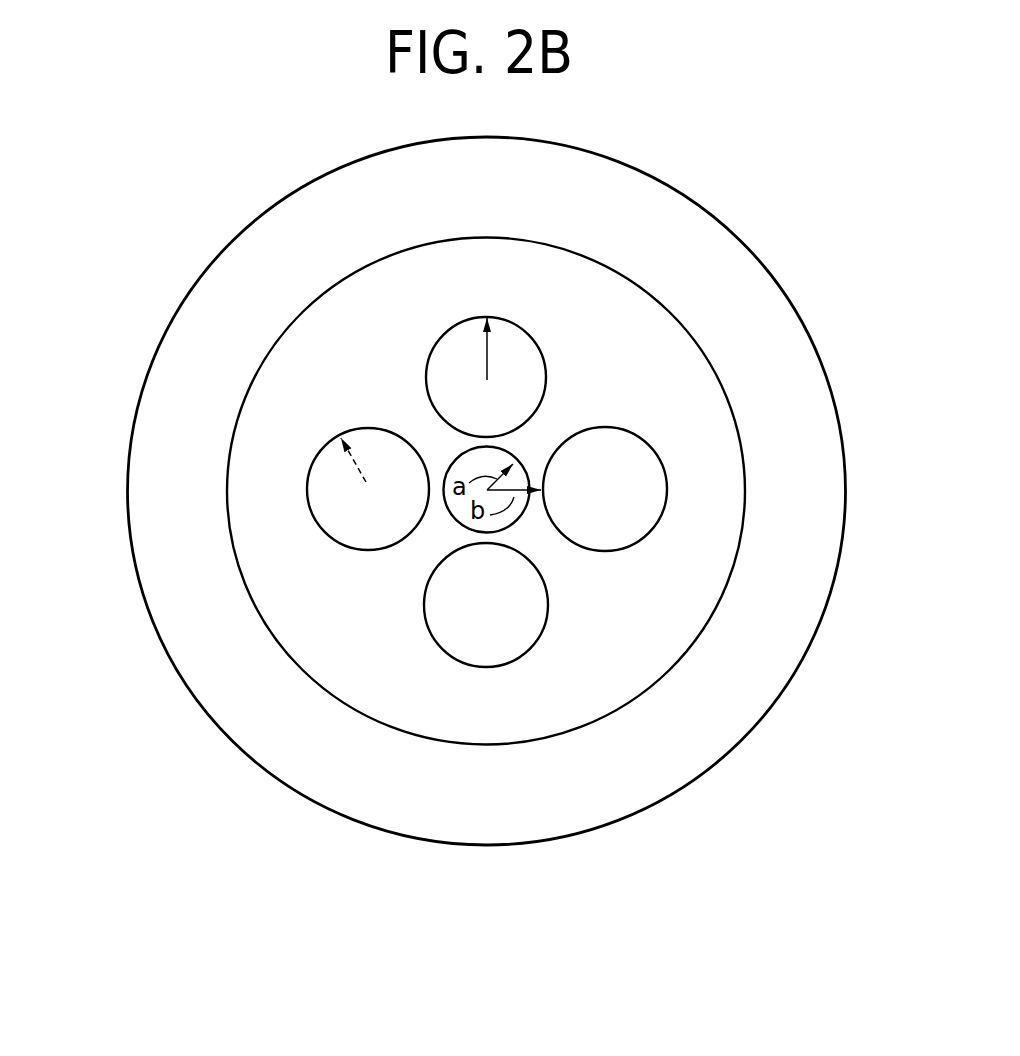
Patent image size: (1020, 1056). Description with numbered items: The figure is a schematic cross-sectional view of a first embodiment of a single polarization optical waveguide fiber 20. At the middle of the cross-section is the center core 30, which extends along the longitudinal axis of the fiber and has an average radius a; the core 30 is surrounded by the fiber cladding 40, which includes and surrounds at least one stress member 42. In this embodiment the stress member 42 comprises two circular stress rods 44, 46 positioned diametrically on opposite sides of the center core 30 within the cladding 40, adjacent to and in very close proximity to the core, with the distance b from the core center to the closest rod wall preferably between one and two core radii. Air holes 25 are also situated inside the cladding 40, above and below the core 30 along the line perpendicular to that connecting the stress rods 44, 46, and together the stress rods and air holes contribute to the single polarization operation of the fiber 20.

The optical waveguide fiber 20 is at (776, 230).
The air holes 25 is at (453, 605).
The center core 30 is at (455, 470).
The fiber cladding 40 is at (232, 548).
The stress member 42 is at (466, 512).
The stress rod 44 is at (637, 458).
The stress rod 46 is at (310, 473).